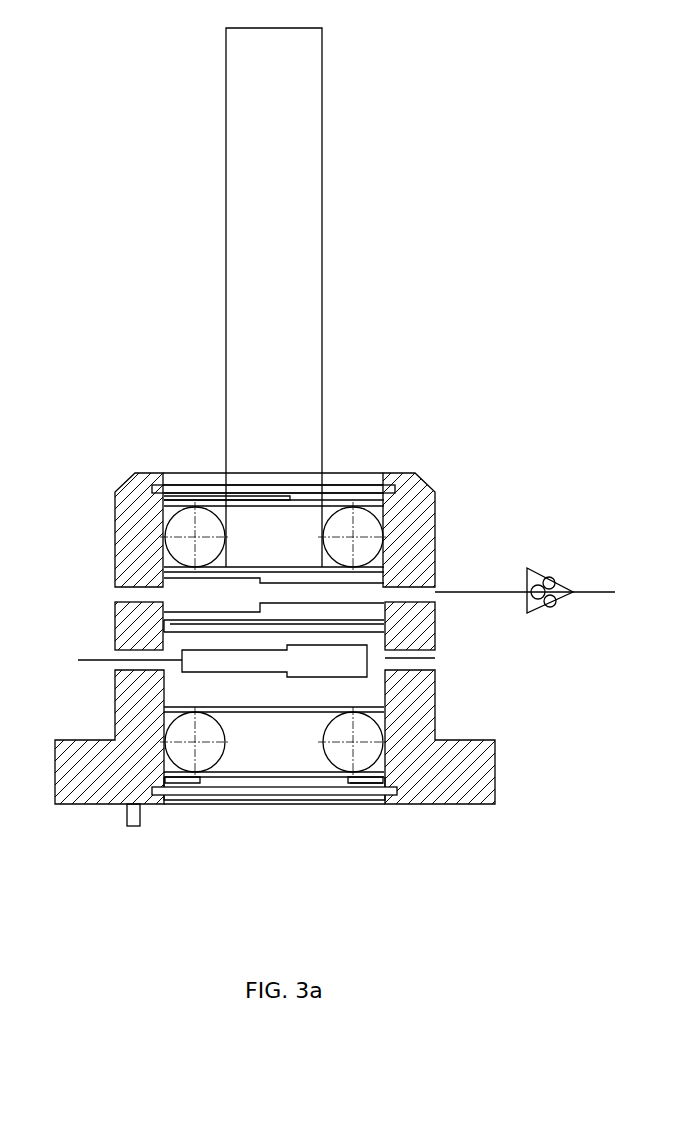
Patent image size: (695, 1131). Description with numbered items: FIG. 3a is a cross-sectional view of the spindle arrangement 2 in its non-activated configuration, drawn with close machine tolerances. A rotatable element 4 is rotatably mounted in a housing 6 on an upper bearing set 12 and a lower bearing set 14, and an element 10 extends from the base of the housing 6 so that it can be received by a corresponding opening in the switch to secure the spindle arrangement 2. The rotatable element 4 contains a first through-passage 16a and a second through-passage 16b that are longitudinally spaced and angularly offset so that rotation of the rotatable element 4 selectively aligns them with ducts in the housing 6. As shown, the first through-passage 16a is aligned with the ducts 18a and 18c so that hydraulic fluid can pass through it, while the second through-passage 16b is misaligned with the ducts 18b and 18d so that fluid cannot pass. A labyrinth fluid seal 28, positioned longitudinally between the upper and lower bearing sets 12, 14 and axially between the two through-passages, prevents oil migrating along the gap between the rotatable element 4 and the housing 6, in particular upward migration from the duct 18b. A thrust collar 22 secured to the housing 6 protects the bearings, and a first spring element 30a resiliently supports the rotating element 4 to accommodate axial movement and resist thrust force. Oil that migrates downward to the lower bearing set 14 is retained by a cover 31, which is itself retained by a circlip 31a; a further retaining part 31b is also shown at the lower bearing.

The spindle arrangement 2 is at (444, 402).
The rotatable element 4 is at (304, 243).
The housing 6 is at (436, 524).
The element 10 is at (126, 823).
The upper bearing set 12 is at (158, 570).
The lower bearing set 14 is at (160, 782).
The first through-passage 16a is at (330, 592).
The second through-passage 16b is at (360, 660).
The duct 18a is at (418, 595).
The duct 18b is at (415, 660).
The duct 18c is at (128, 596).
The duct 18d is at (115, 662).
The thrust collar 22 is at (210, 487).
The seal 28 is at (160, 627).
The first spring element 30a is at (175, 490).
The cover 31 is at (230, 778).
The circlip 31a is at (178, 797).
The second cage plate 31b is at (353, 787).